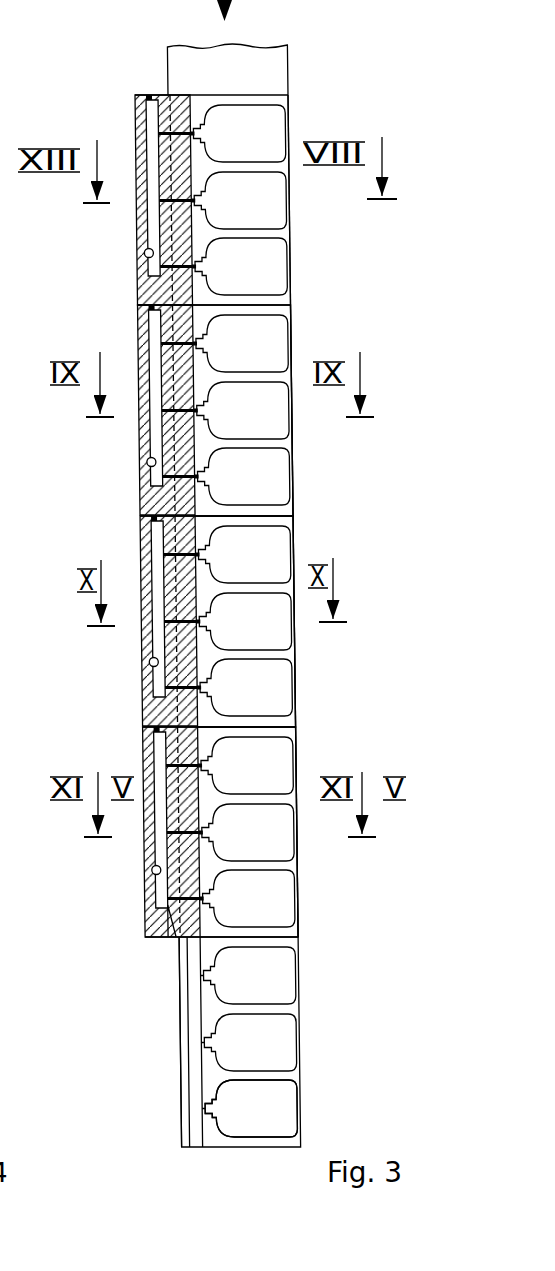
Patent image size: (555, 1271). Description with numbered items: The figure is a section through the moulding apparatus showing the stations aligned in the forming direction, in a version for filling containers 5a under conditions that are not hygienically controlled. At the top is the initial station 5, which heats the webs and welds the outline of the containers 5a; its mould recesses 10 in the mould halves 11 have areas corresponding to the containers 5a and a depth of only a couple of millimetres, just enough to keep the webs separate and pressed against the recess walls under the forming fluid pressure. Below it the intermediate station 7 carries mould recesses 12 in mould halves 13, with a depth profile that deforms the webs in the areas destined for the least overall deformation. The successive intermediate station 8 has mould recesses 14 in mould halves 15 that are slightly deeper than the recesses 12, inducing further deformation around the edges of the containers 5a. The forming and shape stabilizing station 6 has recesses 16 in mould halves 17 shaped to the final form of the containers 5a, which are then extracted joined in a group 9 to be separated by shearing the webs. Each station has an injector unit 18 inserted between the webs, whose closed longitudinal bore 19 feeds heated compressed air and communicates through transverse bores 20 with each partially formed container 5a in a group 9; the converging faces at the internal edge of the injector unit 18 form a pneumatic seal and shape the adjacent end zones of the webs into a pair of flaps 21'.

The initial station 5 is at (307, 97).
The forming and shape stabilizing station 6 is at (317, 856).
The intermediate station 7 is at (320, 319).
The successive intermediate station 8 is at (320, 524).
The group 9 is at (320, 1035).
The mould recess 10 is at (264, 142).
The mould half 11 is at (290, 232).
The mould recess 12 is at (264, 354).
The mould half 13 is at (290, 443).
The mould recess 14 is at (266, 565).
The mould half 15 is at (293, 722).
The recess 16 is at (266, 775).
The mould half 17 is at (297, 930).
The injector unit 18 is at (115, 125).
The longitudinal bore 19 is at (146, 253).
The transverse bore 20 is at (163, 940).
The flap 21' is at (146, 1042).
The container 5a is at (272, 1117).